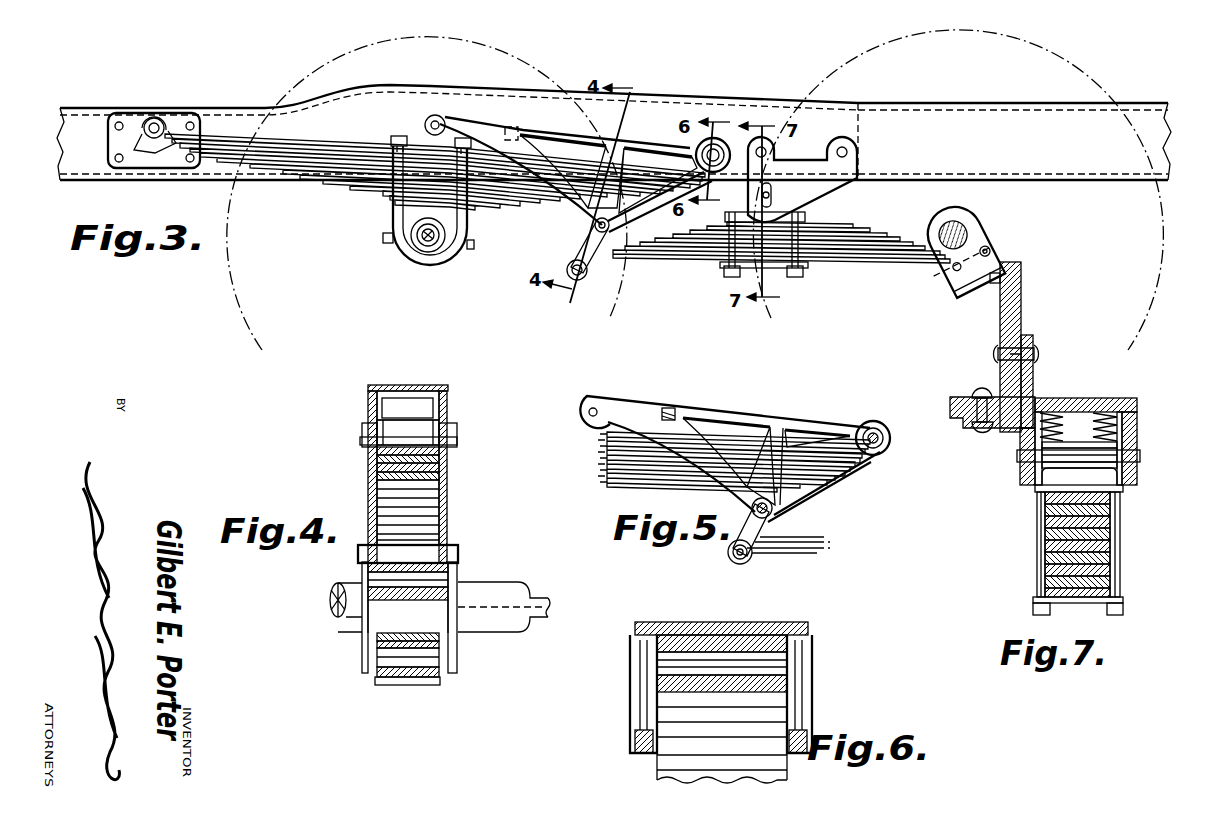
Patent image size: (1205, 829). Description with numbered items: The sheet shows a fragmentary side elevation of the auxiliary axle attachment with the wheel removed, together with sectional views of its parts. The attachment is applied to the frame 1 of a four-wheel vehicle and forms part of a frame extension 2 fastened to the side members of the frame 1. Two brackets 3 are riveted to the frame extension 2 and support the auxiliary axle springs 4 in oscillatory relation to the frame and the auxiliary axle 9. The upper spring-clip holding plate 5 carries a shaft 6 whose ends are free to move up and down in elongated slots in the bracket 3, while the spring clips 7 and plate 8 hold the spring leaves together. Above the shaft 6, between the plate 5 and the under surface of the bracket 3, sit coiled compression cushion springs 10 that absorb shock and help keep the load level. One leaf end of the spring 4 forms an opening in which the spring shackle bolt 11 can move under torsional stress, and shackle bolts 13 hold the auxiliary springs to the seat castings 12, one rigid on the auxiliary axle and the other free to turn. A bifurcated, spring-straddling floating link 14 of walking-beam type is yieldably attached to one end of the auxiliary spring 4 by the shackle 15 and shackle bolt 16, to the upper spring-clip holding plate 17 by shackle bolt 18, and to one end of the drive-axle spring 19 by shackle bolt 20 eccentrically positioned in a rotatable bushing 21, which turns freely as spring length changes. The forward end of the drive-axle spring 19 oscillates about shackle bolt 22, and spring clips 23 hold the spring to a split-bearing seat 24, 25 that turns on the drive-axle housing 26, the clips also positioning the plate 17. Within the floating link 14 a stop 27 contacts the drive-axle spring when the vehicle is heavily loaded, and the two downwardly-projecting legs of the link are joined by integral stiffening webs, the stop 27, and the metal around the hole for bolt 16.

In FIG. 3, the frame 1 is at (352, 96).
In FIG. 7, the frame 1 is at (1000, 327).
In FIG. 3, the frame extension 2 is at (946, 112).
In FIG. 7, the frame extension 2 is at (1021, 300).
In FIG. 3, the bracket 3 is at (860, 163).
In FIG. 7, the bracket 3 is at (1125, 398).
In FIG. 3, the auxiliary axle spring 4 is at (878, 236).
In FIG. 5, the auxiliary axle spring 4 is at (797, 555).
In FIG. 7, the auxiliary axle spring 4 is at (1112, 540).
In FIG. 3, the upper spring-clip holding plate 5 is at (806, 217).
In FIG. 7, the upper spring-clip holding plate 5 is at (1124, 488).
In FIG. 3, the shaft 6 is at (772, 194).
In FIG. 7, the shaft 6 is at (1018, 457).
In FIG. 3, the spring clip 7 is at (724, 265).
In FIG. 7, the spring clip 7 is at (1037, 556).
In FIG. 3, the plate 8 is at (788, 270).
In FIG. 7, the plate 8 is at (1070, 603).
In FIG. 3, the auxiliary axle 9 is at (973, 220).
In FIG. 7, the cushion spring 10 is at (1076, 412).
In FIG. 3, the spring shackle bolt 11 is at (957, 280).
In FIG. 3, the shackling spring seat 12 is at (996, 230).
In FIG. 3, the shackle bolt 13 is at (1018, 248).
In FIG. 3, the bifurcated floating link 14 is at (562, 192).
In FIG. 4, the bifurcated floating link 14 is at (450, 404).
In FIG. 5, the bifurcated floating link 14 is at (730, 407).
In FIG. 6, the bifurcated floating link 14 is at (735, 622).
In FIG. 3, the shackle 15 is at (577, 236).
In FIG. 4, the shackle 15 is at (362, 596).
In FIG. 5, the shackle 15 is at (745, 528).
In FIG. 3, the shackle bolt 16 is at (593, 224).
In FIG. 4, the shackle bolt 16 is at (425, 578).
In FIG. 5, the shackle bolt 16 is at (774, 510).
In FIG. 3, the upper spring-clip holding plate 17 is at (400, 135).
In FIG. 4, the upper spring-clip holding plate 17 is at (362, 431).
In FIG. 3, the shackle bolt 18 is at (446, 121).
In FIG. 3, the drive-axle spring 19 is at (346, 182).
In FIG. 4, the drive-axle spring 19 is at (415, 514).
In FIG. 5, the drive-axle spring 19 is at (655, 465).
In FIG. 6, the drive-axle spring 19 is at (682, 748).
In FIG. 3, the shackle bolt 20 is at (720, 138).
In FIG. 5, the shackle bolt 20 is at (879, 426).
In FIG. 6, the shackle bolt 20 is at (760, 645).
In FIG. 3, the rotatable bushing 21 is at (716, 171).
In FIG. 5, the rotatable bushing 21 is at (880, 455).
In FIG. 6, the rotatable bushing 21 is at (640, 708).
In FIG. 3, the shackle bolt 22 is at (158, 118).
In FIG. 3, the spring clip 23 is at (392, 212).
In FIG. 4, the spring clip 23 is at (368, 483).
In FIG. 3, the split-bearing seat 24 is at (384, 243).
In FIG. 3, the split-bearing seat 25 is at (430, 256).
In FIG. 3, the drive-axle housing 26 is at (420, 252).
In FIG. 4, the drive-axle housing 26 is at (500, 625).
In FIG. 3, the stop 27 is at (516, 127).
In FIG. 4, the stop 27 is at (400, 398).
In FIG. 5, the stop 27 is at (675, 406).